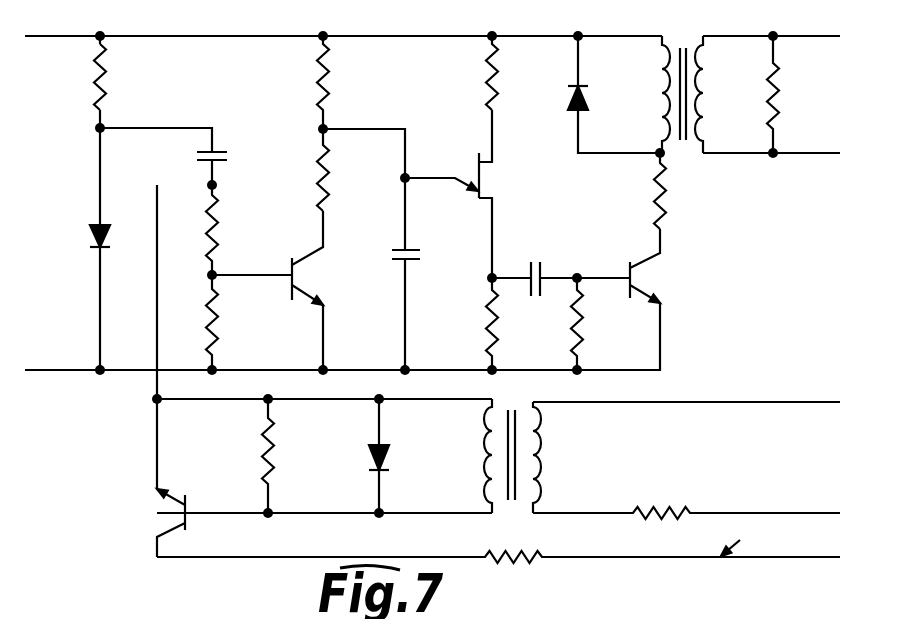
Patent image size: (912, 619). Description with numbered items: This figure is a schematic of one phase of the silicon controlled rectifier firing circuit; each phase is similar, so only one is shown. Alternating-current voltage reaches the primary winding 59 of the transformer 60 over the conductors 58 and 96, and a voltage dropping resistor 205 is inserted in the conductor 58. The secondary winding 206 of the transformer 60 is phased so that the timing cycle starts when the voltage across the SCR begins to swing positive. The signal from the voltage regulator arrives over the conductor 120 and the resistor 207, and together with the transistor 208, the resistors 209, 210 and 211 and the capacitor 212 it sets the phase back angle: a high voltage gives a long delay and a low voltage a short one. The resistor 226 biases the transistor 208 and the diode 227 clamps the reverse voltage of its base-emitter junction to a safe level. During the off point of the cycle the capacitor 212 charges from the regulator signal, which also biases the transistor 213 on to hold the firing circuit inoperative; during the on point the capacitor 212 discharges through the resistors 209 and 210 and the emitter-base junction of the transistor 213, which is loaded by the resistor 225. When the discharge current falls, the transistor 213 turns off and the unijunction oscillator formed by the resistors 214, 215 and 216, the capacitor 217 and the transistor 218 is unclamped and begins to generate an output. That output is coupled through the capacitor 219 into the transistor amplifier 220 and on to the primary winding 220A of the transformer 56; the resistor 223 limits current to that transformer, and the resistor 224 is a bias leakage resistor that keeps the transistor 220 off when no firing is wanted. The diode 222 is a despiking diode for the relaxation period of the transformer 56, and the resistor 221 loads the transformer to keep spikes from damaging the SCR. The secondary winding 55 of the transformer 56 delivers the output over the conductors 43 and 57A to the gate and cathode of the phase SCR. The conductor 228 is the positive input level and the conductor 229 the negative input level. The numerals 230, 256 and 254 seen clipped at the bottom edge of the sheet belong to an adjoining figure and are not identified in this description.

The conductor 228 is at (365, 36).
The conductor 229 is at (62, 375).
The resistor 211 is at (108, 80).
The capacitor 212 is at (222, 152).
The resistor 209 is at (216, 232).
The resistor 210 is at (216, 312).
The transistor 213 is at (308, 284).
The resistor 214 is at (331, 82).
The resistor 225 is at (328, 190).
The capacitor 217 is at (409, 246).
The transistor 218 is at (483, 178).
The resistor 215 is at (495, 104).
The resistor 216 is at (488, 326).
The capacitor 219 is at (541, 262).
The resistor 224 is at (582, 330).
The transistor amplifier 220 is at (636, 278).
The resistor 223 is at (666, 200).
The diode 222 is at (586, 108).
The primary winding 220A is at (670, 90).
The transformer 56 is at (676, 77).
The secondary winding 55 is at (703, 118).
The resistor 221 is at (780, 98).
The conductor 57A is at (790, 36).
The conductor 43 is at (808, 153).
The transistor 208 is at (177, 513).
The resistor 226 is at (265, 456).
The diode 227 is at (392, 446).
The transformer 60 is at (513, 443).
The secondary winding 206 is at (492, 474).
The primary winding 59 is at (541, 452).
The conductor 96 is at (790, 402).
The voltage dropping resistor 205 is at (645, 512).
The conductor 58 is at (785, 513).
The resistor 207 is at (497, 552).
The conductor 120 is at (760, 540).
The element (adjacent figure, partially visible) 230 is at (96, 612).
The element (adjacent figure, partially visible) 256 is at (515, 606).
The element (adjacent figure, partially visible) 254 is at (726, 612).